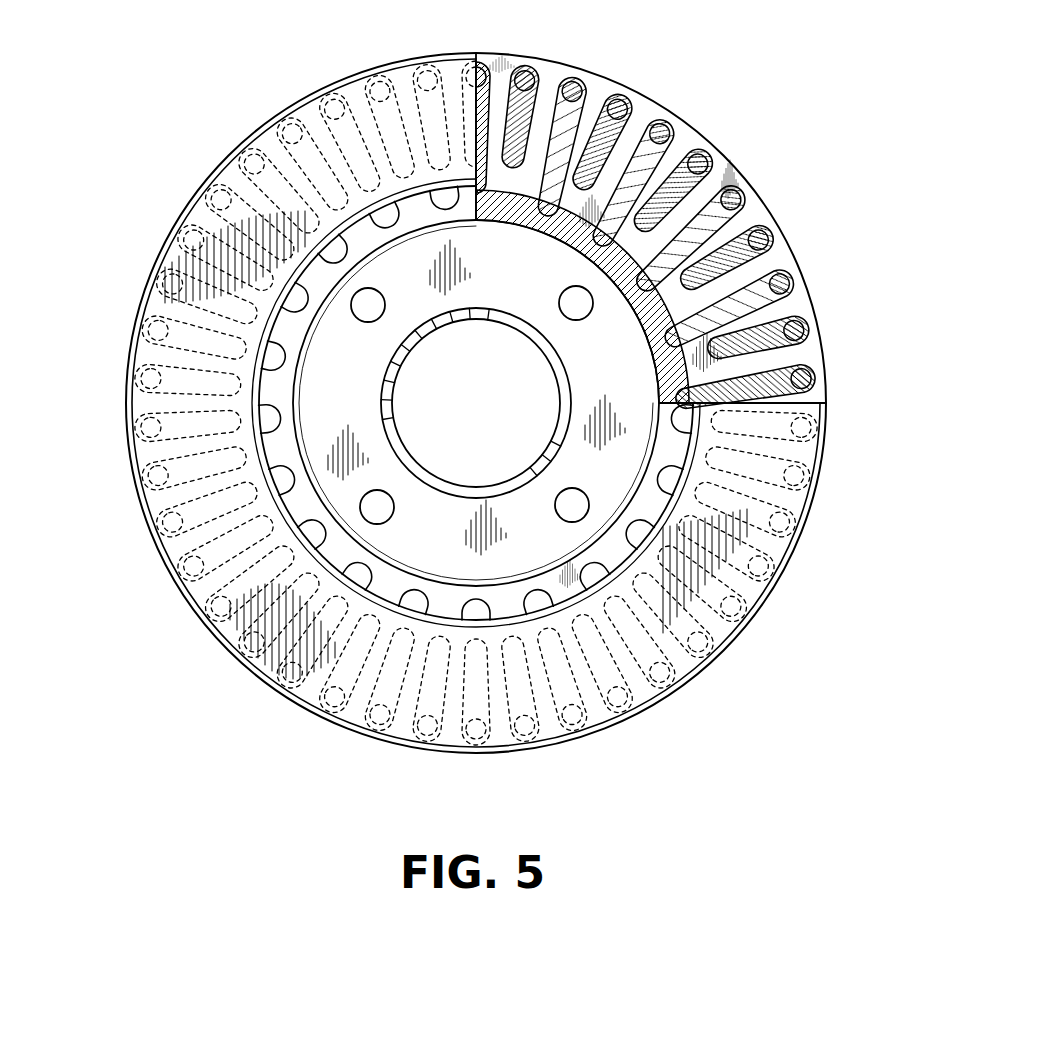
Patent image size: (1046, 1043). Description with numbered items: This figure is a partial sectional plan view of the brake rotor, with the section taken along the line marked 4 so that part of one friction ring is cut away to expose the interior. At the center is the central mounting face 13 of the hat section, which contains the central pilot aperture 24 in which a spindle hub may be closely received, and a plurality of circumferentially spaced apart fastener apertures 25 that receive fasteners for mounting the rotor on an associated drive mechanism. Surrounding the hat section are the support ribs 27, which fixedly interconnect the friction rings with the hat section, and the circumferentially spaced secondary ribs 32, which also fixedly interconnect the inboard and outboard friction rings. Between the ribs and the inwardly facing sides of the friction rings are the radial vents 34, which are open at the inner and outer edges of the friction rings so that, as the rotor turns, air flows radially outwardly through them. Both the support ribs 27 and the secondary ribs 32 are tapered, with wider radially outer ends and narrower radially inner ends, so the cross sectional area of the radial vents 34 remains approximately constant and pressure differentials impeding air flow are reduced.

The central mounting face 13 is at (341, 415).
The central pilot aperture 24 is at (418, 342).
The fastener apertures 25 is at (562, 310).
The support ribs 27 is at (580, 84).
The secondary ribs 32 is at (632, 98).
The radial vents 34 is at (768, 263).
The section line 4- 4 is at (68, 420).